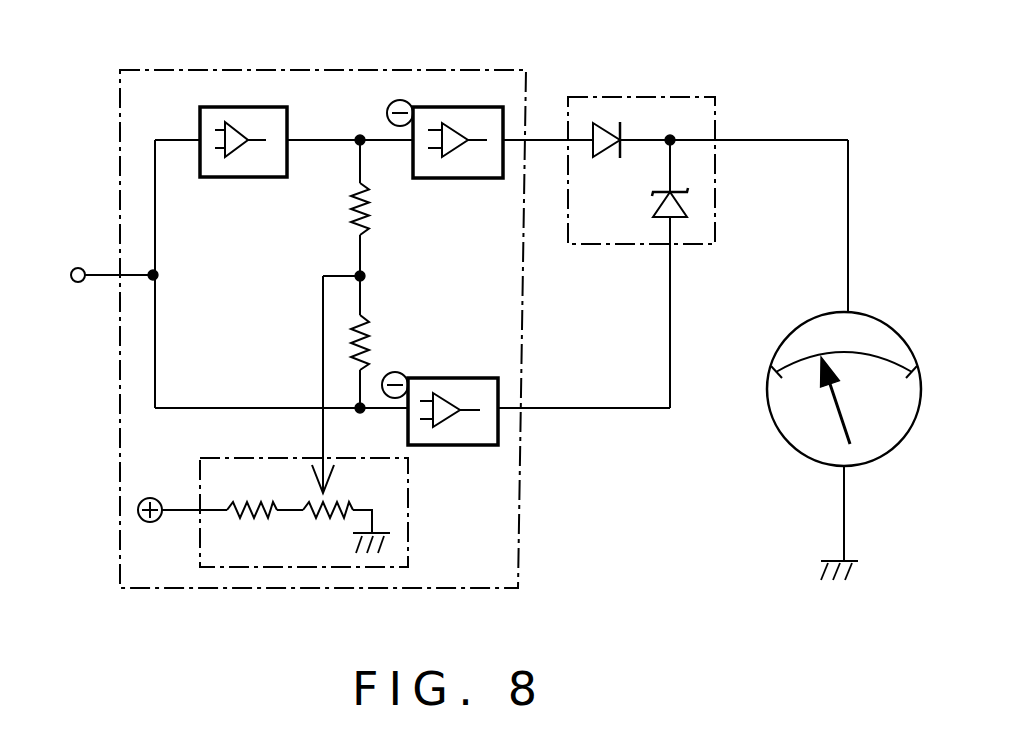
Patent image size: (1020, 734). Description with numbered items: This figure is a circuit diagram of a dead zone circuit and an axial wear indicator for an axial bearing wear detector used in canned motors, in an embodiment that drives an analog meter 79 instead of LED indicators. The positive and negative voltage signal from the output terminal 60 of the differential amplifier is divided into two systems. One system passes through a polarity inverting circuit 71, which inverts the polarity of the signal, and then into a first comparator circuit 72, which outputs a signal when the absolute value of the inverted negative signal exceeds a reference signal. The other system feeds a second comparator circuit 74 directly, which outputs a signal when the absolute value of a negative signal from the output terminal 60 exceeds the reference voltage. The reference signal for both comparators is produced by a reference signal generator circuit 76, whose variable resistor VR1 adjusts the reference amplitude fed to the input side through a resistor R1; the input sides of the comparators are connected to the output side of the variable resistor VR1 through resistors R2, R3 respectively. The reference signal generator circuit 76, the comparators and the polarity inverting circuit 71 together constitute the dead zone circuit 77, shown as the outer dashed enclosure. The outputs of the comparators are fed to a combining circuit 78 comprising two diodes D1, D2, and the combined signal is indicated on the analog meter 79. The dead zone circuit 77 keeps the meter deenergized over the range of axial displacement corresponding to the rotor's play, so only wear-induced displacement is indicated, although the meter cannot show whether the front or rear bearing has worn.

The output terminal 60 is at (73, 268).
The polarity inverting circuit 71 is at (236, 107).
The first comparator circuit 72 is at (478, 107).
The second comparator circuit 74 is at (478, 367).
The reference signal generator circuit 76 is at (315, 512).
The dead zone circuit 77 is at (237, 588).
The combining circuit 78 is at (641, 132).
The analog meter 79 is at (782, 435).
The resistor R1 is at (252, 518).
The variable resistor VR1 is at (325, 520).
The resistor R2 is at (370, 210).
The resistor R3 is at (370, 320).
The diode D1 is at (601, 157).
The diode D2 is at (653, 211).